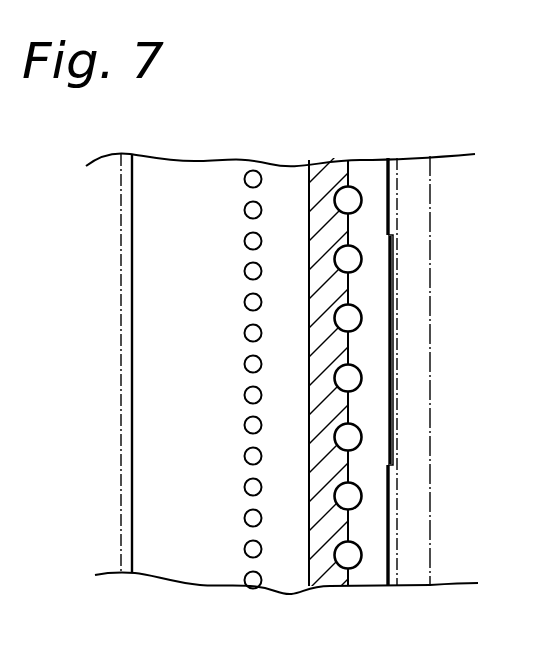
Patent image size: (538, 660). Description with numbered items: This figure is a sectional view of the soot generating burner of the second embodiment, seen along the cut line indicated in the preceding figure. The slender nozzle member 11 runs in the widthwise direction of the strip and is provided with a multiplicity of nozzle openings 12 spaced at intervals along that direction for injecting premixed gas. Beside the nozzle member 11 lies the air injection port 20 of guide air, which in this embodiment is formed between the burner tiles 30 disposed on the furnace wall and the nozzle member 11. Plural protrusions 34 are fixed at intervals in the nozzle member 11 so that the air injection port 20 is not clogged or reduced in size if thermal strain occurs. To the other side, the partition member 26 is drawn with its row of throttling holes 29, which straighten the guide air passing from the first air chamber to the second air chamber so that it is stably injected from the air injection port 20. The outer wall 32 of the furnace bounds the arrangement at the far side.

The partition member 26 is at (178, 183).
The throttling holes 29 is at (246, 184).
The nozzle member 11 is at (380, 290).
The nozzle openings 12 is at (355, 252).
The air injection port 20 is at (393, 350).
The protrusions 34 is at (395, 233).
The burner tiles 30 is at (418, 488).
The outer wall 32 is at (440, 574).